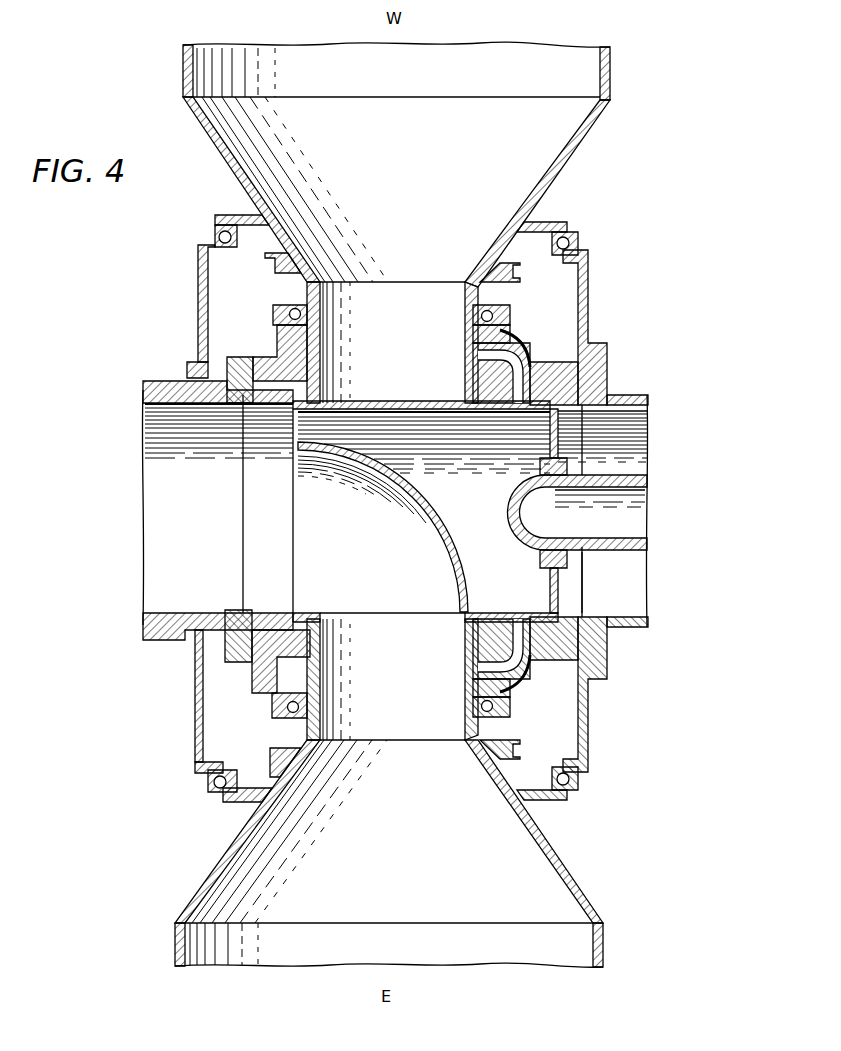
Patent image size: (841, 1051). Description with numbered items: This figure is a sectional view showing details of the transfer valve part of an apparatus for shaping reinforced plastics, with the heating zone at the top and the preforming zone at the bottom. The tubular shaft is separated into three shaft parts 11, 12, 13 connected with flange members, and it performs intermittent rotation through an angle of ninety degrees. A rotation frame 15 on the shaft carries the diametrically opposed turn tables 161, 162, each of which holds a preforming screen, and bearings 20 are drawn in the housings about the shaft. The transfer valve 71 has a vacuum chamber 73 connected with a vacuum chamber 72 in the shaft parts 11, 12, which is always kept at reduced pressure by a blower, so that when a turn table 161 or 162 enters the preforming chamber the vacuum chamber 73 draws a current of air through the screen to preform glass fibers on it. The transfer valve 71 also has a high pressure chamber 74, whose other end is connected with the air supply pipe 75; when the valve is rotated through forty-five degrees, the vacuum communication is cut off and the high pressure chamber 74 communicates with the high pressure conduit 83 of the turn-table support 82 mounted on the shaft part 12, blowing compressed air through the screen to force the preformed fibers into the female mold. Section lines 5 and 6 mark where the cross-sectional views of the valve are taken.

The shaft part 11 is at (167, 631).
The shaft part 12 is at (260, 652).
The shaft part 13 is at (633, 402).
The rotation frame 15 is at (197, 732).
The turn table 161 is at (560, 860).
The turn table 162 is at (564, 166).
The bearing 20 is at (520, 272).
The transfer valve 71 is at (432, 505).
The vacuum chamber 72 is at (165, 462).
The vacuum chamber 73 is at (432, 451).
The high pressure chamber 74 is at (545, 532).
The air supply pipe 75 is at (632, 554).
The turn-table support 82 is at (525, 342).
The high pressure conduit 83 is at (513, 367).
The section line 5— 5 is at (417, 345).
The section line 6— 6 is at (550, 308).